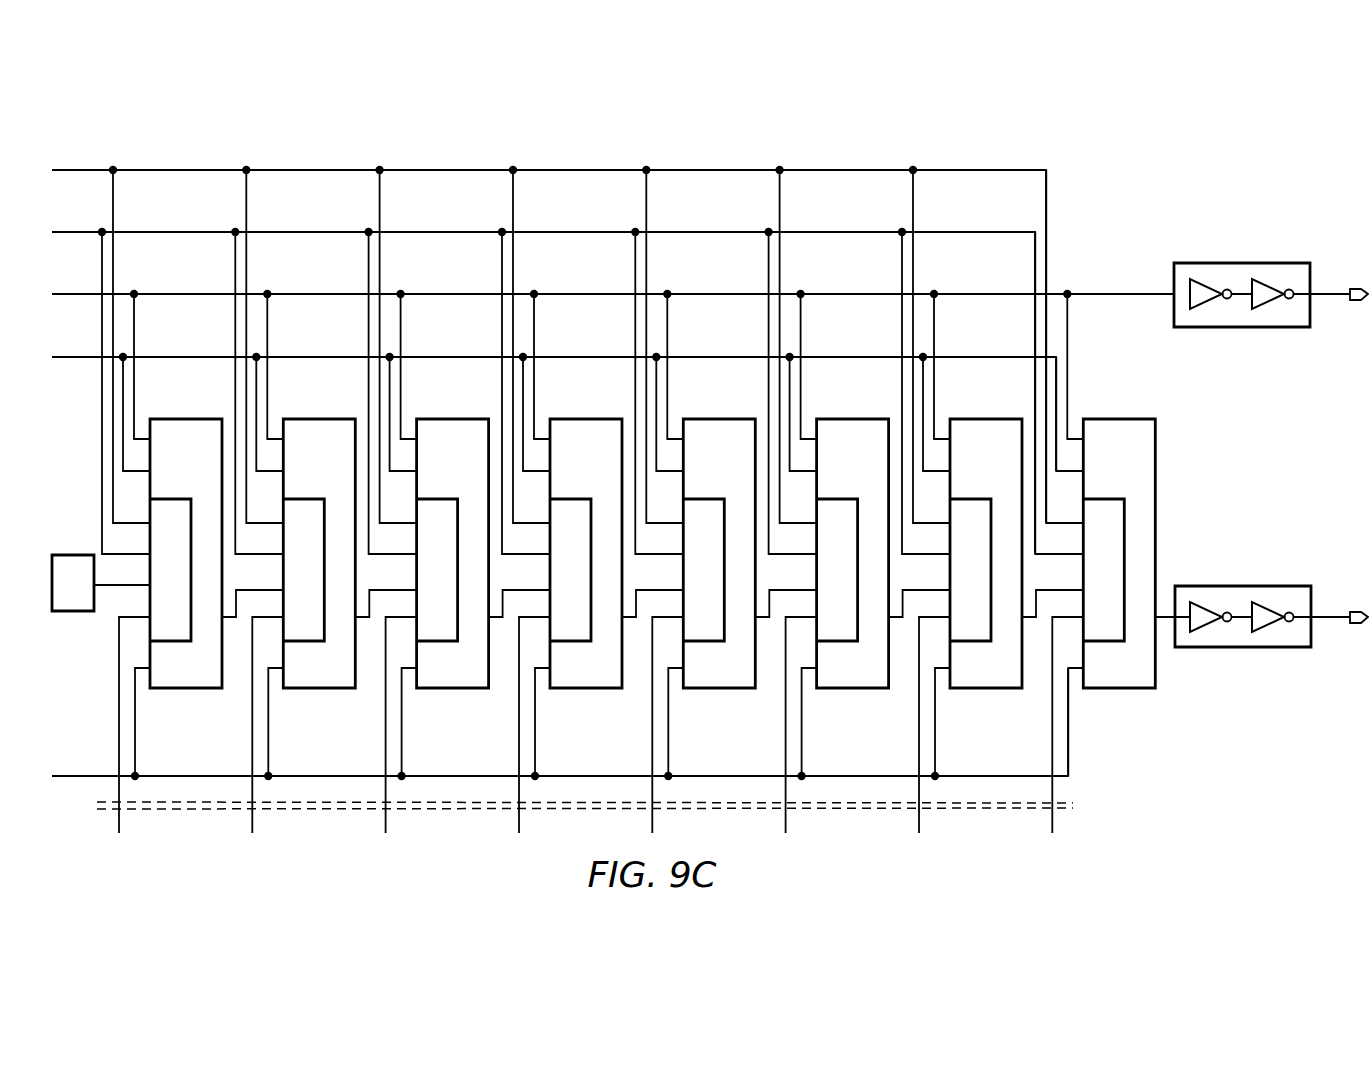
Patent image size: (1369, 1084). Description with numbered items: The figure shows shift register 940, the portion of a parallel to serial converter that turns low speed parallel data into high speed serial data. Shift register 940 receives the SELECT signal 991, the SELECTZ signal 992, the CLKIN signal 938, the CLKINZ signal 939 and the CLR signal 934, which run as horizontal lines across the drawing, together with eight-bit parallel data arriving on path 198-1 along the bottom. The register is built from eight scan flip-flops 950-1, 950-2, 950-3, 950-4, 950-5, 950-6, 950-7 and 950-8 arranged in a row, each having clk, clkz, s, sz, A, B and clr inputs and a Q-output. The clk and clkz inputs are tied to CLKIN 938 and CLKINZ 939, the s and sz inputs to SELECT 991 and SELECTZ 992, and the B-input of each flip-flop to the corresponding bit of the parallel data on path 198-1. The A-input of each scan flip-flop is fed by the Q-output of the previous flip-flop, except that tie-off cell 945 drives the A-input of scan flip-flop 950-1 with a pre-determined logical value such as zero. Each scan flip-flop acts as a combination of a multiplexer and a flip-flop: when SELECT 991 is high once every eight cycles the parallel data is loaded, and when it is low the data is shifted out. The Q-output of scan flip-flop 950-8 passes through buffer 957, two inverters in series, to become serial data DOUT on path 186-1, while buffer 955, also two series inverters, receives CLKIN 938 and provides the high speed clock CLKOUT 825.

The shift register 940 is at (1134, 178).
The SELECT signal 991 is at (82, 169).
The SELECTZ signal 992 is at (82, 231).
The CLKIN signal 938 is at (82, 293).
The CLKINZ signal 939 is at (82, 356).
The CLR signal 934 is at (82, 778).
The tie-off cell 945 is at (73, 612).
The scan flip-flop 950-1 is at (186, 689).
The scan flip-flop 950-2 is at (324, 500).
The scan flip-flop 950-3 is at (457, 500).
The scan flip-flop 950-4 is at (591, 500).
The scan flip-flop 950-5 is at (724, 500).
The scan flip-flop 950-6 is at (857, 500).
The scan flip-flop 950-7 is at (991, 500).
The scan flip-flop 950-8 is at (1105, 501).
The buffer 955 is at (1251, 265).
The buffer 957 is at (1254, 648).
The CLKOUT 825 is at (1330, 292).
The path 186-1 is at (1330, 620).
The path 198-1 is at (1073, 805).